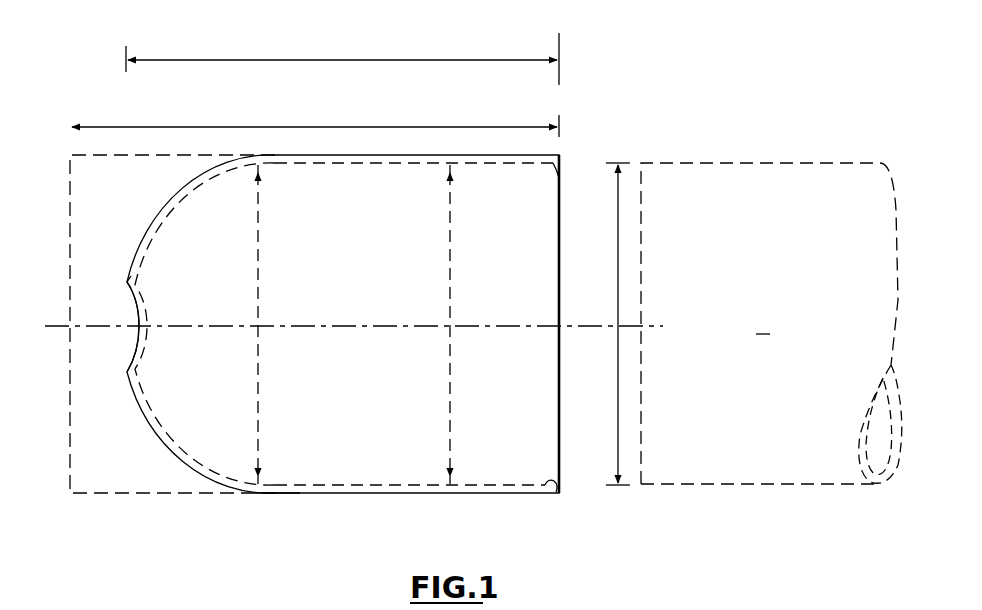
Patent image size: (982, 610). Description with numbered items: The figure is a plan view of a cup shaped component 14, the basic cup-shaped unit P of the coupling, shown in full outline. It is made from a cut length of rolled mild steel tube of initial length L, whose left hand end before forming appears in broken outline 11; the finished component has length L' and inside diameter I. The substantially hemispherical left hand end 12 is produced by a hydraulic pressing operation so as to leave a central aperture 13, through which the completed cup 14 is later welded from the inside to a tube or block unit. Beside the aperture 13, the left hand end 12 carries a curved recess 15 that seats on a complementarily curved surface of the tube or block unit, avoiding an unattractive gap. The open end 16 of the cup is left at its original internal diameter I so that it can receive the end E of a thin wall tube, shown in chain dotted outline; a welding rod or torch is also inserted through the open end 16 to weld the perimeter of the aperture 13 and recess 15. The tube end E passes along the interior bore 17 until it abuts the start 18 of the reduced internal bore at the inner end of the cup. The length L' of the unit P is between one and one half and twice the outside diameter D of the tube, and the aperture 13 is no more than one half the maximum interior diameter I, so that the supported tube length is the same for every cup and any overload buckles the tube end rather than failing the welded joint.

The broken outline 11 is at (72, 327).
The left hand end 12 is at (165, 411).
The aperture 13 is at (127, 371).
The cup shaped component 14 is at (470, 477).
The curved recess 15 is at (127, 283).
The open end 16 is at (558, 178).
The interior bore 17 is at (558, 488).
The start of reduced internal bore 18 is at (258, 452).
The length of finished component L' is at (342, 52).
The initial length L is at (315, 112).
The outside diameter D is at (616, 388).
The end of tubular element E is at (745, 163).
The inside diameter I is at (450, 258).
The cup-shaped unit P is at (282, 497).